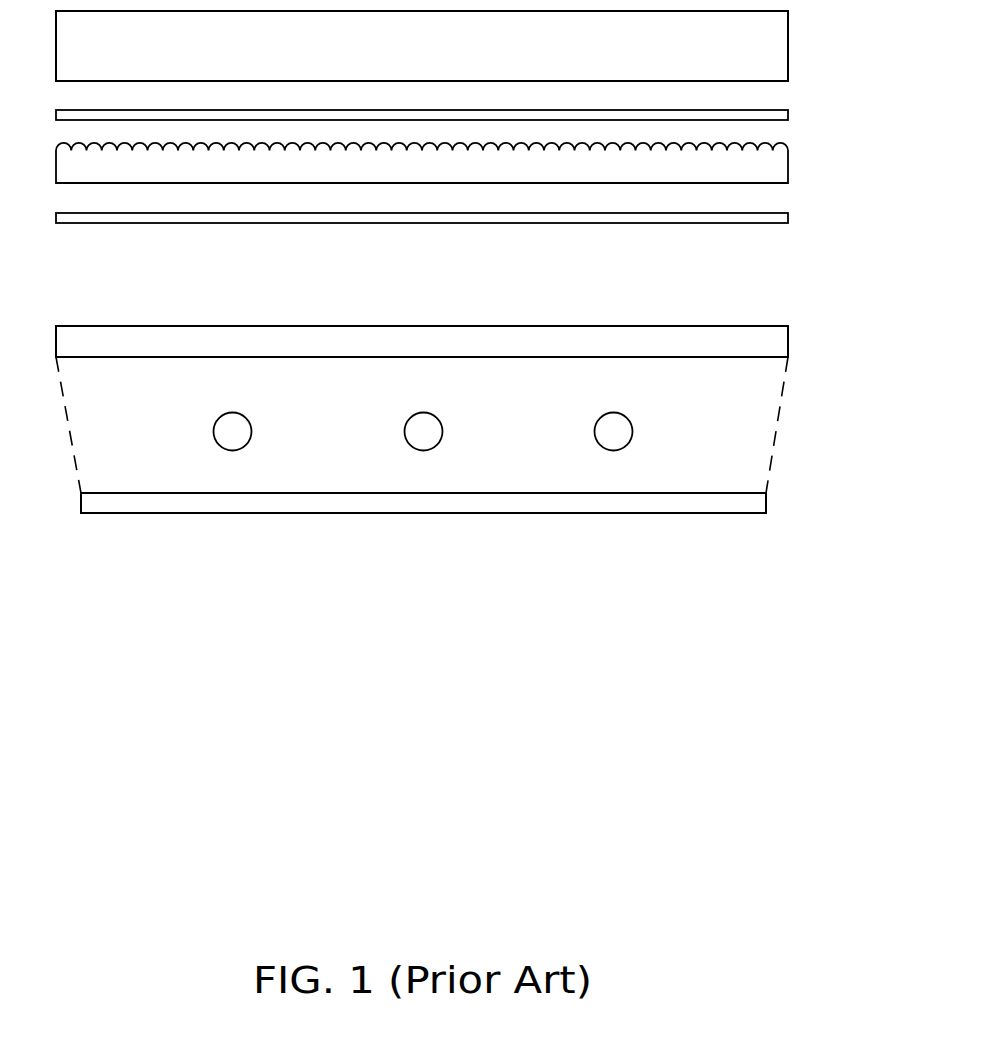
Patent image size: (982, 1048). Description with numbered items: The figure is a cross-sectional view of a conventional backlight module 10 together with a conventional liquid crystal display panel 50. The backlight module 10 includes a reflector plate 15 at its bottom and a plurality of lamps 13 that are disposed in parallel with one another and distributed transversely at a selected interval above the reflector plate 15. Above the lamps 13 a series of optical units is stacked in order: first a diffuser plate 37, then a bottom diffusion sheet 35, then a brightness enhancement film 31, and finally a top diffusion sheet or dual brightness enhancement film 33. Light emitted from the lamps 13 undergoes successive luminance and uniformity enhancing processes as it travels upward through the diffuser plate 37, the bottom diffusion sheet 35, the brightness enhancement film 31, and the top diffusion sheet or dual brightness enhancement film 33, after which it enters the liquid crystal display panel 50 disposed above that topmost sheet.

The backlight module 10 is at (448, 452).
The lamps 13 is at (613, 430).
The reflector plate 15 is at (533, 502).
The brightness enhancement film 31 is at (775, 166).
The top diffusion sheet or dual brightness enhancement film 33 is at (775, 115).
The bottom diffusion sheet 35 is at (775, 218).
The diffuser plate 37 is at (777, 341).
The liquid crystal display (LCD) panel 50 is at (775, 34).